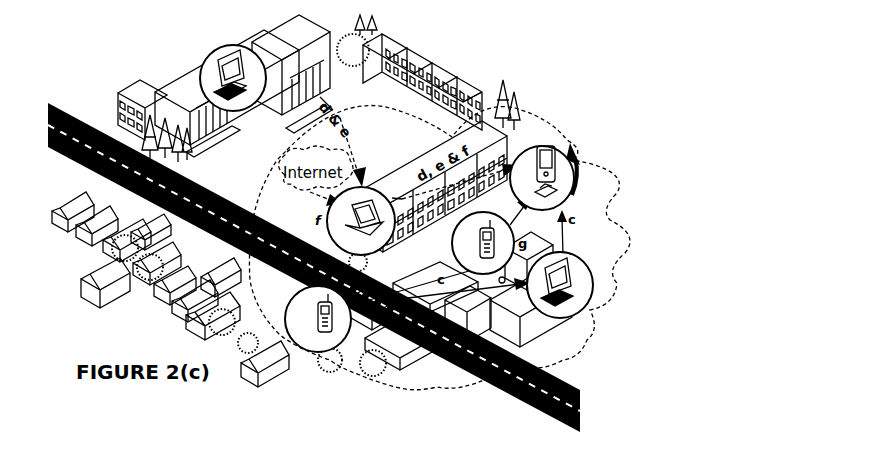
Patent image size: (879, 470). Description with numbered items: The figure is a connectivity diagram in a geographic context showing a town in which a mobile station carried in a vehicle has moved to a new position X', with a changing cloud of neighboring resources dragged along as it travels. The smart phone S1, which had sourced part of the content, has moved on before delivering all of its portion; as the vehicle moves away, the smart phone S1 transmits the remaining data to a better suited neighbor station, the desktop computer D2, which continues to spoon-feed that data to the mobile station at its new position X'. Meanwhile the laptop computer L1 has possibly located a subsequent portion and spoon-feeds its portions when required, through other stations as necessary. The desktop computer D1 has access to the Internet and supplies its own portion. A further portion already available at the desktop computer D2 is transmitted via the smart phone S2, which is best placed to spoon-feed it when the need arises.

The desktop computer D1 is at (233, 78).
The laptop computer L1 is at (361, 221).
The new position of the mobile station X' is at (542, 178).
The smart phone S2 is at (483, 243).
The desktop computer D2 is at (560, 285).
The smart phone S1 is at (318, 319).